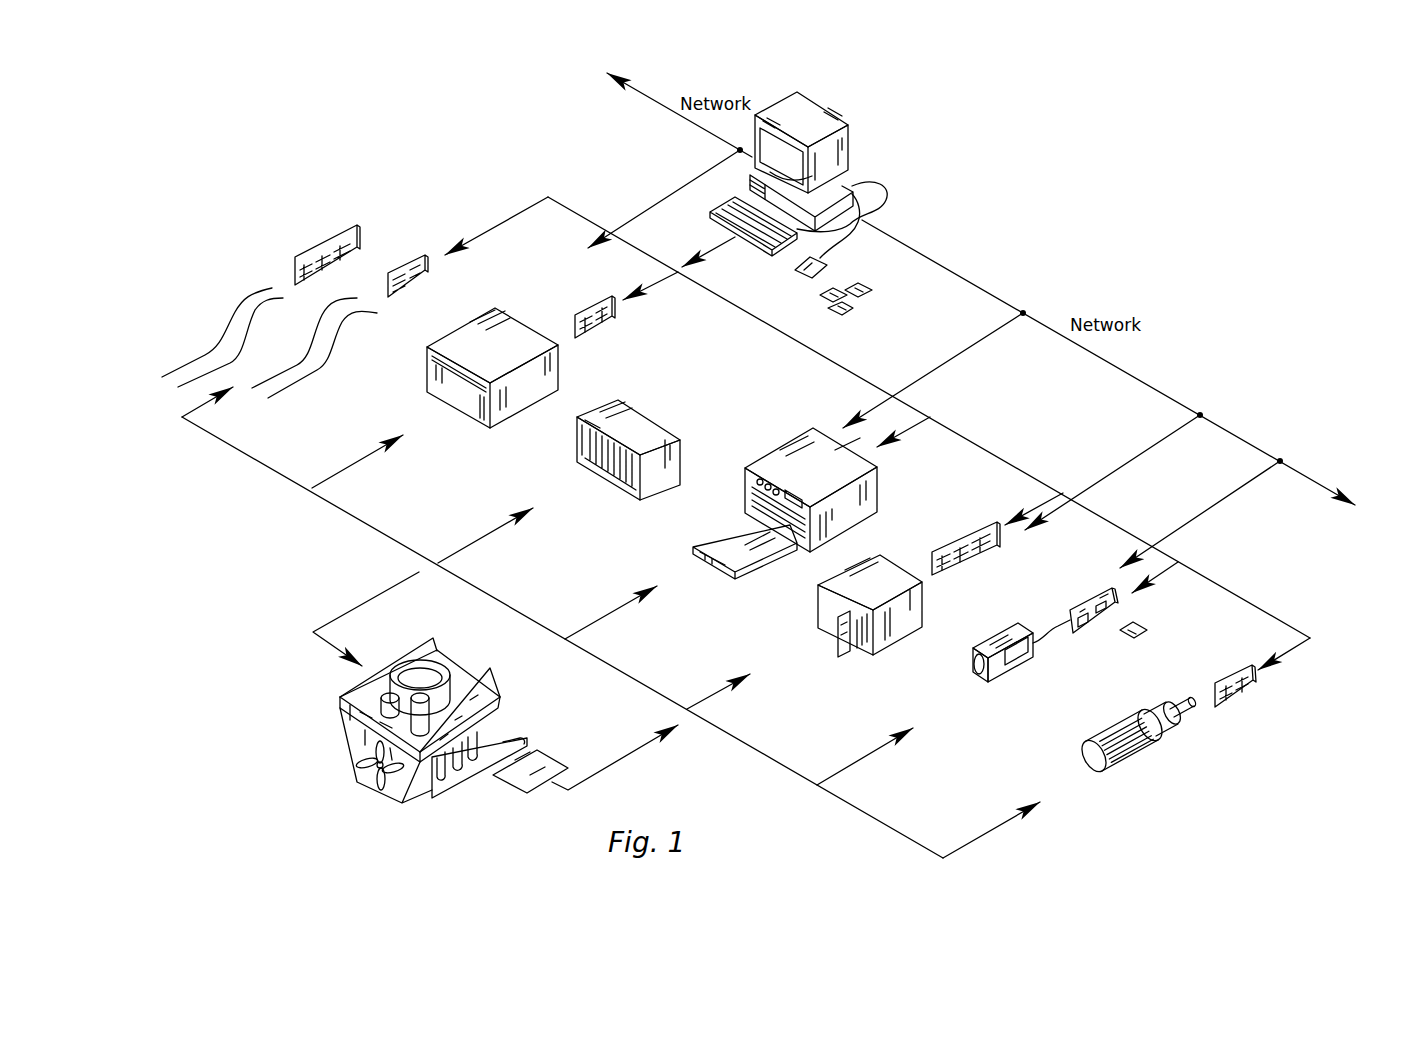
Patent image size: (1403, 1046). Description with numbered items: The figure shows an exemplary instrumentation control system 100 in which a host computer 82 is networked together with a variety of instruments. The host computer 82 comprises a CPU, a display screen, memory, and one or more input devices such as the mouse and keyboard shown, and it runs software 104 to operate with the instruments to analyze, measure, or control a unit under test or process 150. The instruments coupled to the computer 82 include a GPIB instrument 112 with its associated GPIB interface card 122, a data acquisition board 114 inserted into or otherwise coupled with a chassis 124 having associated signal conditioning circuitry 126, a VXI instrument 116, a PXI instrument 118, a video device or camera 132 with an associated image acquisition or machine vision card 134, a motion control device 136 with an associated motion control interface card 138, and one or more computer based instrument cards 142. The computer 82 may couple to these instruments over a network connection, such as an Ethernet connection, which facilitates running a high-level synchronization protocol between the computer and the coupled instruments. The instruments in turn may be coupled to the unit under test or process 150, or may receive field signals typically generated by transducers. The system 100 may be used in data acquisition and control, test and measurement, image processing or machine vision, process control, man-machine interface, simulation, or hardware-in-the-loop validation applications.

The host computer 82 is at (818, 115).
The instrumentation control system 100 is at (1075, 230).
The software 104 is at (843, 312).
The GPIB instrument 112 is at (460, 338).
The data acquisition board 114 is at (985, 520).
The VXI instrument 116 is at (783, 460).
The PXI instrument 118 is at (635, 422).
The GPIB interface card 122 is at (590, 310).
The chassis 124 is at (828, 615).
The signal conditioning circuitry 126 is at (845, 633).
The video device or camera 132 is at (1003, 670).
The image acquisition card 134 is at (1085, 600).
The motion control device 136 is at (1132, 755).
The motion control interface card 138 is at (1235, 697).
The computer based instrument card 142 is at (306, 252).
The unit under test or process 150 is at (355, 733).